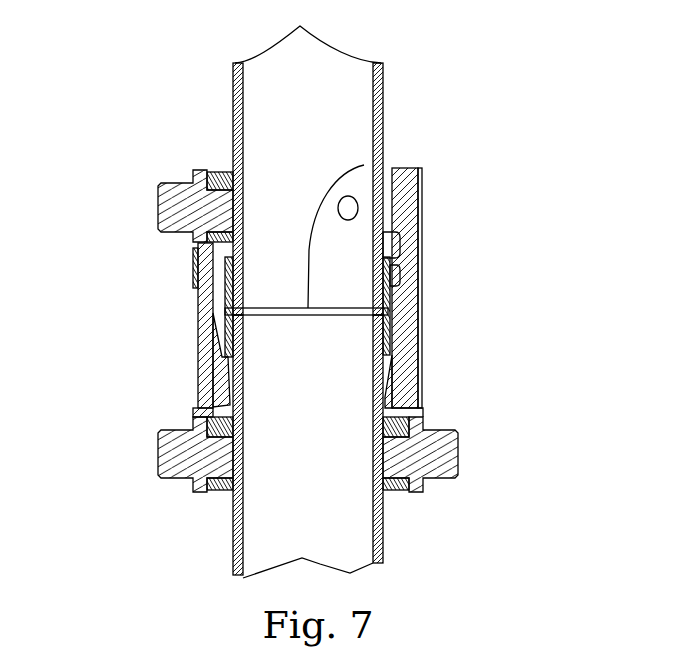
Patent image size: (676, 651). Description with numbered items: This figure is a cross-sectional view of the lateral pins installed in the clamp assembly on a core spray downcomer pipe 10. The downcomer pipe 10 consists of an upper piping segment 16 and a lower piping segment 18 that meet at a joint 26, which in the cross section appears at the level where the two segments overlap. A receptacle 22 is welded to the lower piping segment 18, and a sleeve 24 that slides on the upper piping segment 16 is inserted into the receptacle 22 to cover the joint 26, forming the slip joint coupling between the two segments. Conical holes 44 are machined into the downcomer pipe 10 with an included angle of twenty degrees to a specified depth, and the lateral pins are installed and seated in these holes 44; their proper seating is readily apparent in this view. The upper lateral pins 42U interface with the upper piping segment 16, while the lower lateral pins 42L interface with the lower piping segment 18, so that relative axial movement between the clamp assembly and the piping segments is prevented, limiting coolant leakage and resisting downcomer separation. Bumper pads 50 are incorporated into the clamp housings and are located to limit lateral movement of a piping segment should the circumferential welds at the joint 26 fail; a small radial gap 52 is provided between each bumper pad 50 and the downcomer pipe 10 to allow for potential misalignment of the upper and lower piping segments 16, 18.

The downcomer pipe 10 is at (295, 305).
The upper piping segment 16 is at (383, 103).
The lower piping segment 18 is at (235, 530).
The receptacle 22 is at (400, 367).
The sleeve 24 is at (230, 283).
The joint 26 is at (383, 158).
The upper lateral pins 42U is at (170, 208).
The lower lateral pins 42L is at (158, 452).
The conical holes 44 is at (243, 190).
The bumper pads 50 is at (422, 278).
The radial gap 52 is at (397, 310).